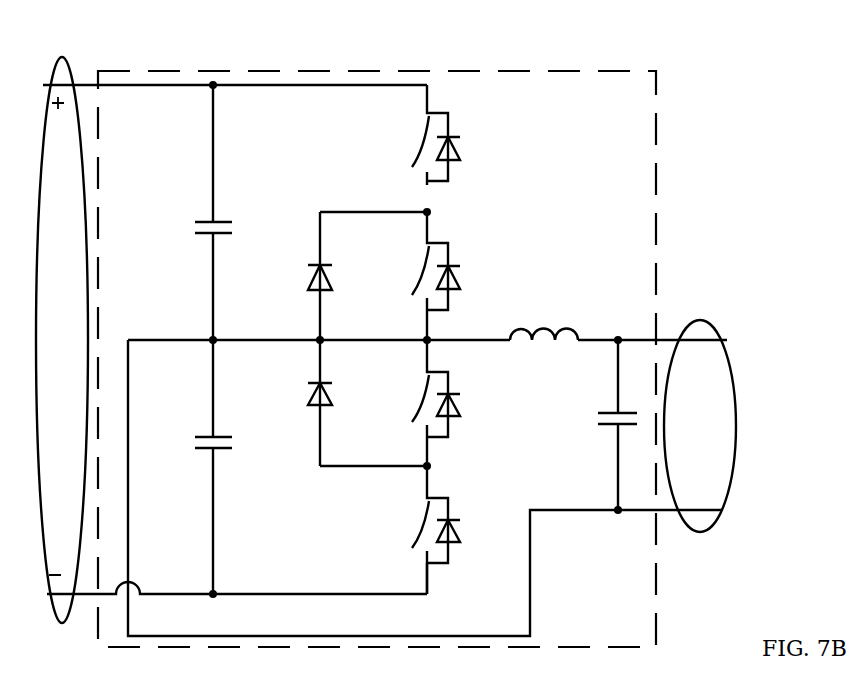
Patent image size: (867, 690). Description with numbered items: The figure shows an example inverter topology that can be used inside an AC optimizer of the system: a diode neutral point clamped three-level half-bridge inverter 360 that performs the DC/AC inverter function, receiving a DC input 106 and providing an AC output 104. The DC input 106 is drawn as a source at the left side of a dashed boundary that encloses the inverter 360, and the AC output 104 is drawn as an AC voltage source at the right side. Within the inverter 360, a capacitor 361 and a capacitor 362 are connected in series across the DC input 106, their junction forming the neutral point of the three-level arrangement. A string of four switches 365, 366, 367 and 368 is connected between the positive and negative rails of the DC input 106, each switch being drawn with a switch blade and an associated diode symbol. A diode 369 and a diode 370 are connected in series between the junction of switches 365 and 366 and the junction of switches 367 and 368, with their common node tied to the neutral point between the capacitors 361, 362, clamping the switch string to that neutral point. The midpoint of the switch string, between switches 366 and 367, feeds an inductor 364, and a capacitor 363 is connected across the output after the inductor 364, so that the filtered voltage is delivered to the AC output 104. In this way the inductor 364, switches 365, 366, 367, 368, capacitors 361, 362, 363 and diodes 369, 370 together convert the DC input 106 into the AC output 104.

The AC output 104 is at (700, 320).
The DC input 106 is at (62, 60).
The inverter 360 is at (358, 68).
The capacitor 361 is at (183, 222).
The capacitor 362 is at (238, 452).
The capacitor 363 is at (590, 428).
The inductor 364 is at (537, 350).
The switch 365 is at (407, 150).
The switch 366 is at (405, 282).
The switch 367 is at (407, 402).
The switch 368 is at (405, 530).
The diode 369 is at (302, 283).
The diode 370 is at (302, 398).